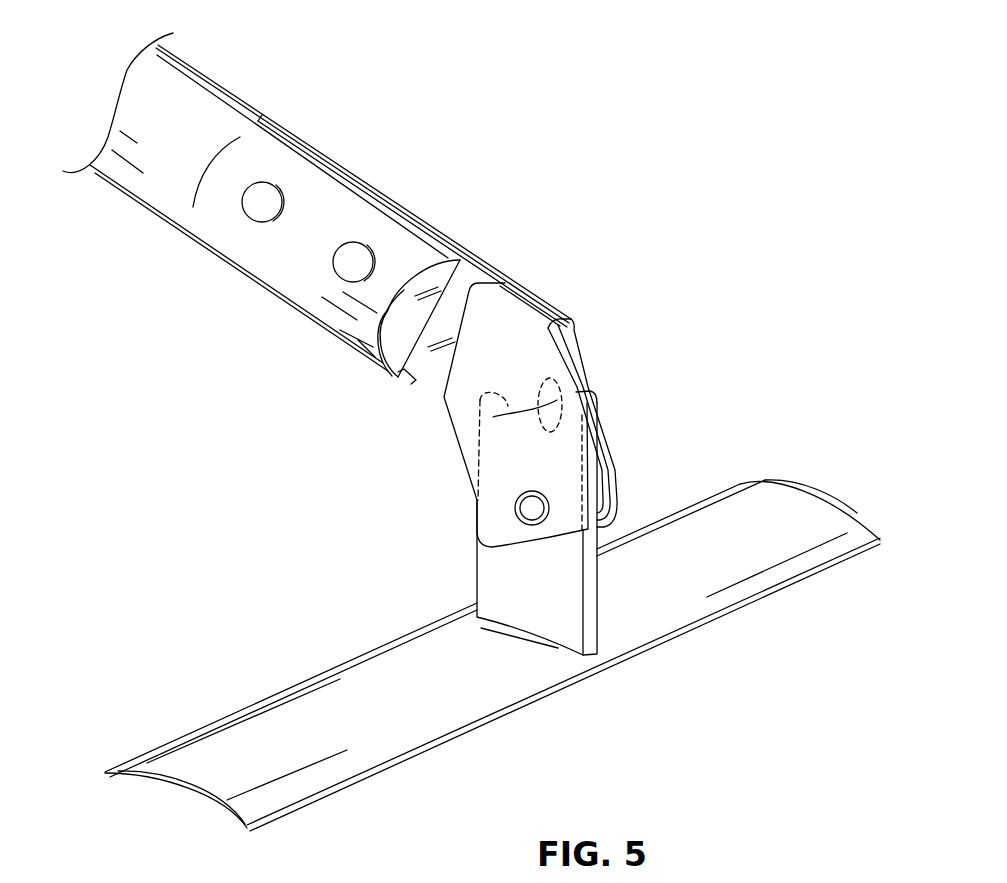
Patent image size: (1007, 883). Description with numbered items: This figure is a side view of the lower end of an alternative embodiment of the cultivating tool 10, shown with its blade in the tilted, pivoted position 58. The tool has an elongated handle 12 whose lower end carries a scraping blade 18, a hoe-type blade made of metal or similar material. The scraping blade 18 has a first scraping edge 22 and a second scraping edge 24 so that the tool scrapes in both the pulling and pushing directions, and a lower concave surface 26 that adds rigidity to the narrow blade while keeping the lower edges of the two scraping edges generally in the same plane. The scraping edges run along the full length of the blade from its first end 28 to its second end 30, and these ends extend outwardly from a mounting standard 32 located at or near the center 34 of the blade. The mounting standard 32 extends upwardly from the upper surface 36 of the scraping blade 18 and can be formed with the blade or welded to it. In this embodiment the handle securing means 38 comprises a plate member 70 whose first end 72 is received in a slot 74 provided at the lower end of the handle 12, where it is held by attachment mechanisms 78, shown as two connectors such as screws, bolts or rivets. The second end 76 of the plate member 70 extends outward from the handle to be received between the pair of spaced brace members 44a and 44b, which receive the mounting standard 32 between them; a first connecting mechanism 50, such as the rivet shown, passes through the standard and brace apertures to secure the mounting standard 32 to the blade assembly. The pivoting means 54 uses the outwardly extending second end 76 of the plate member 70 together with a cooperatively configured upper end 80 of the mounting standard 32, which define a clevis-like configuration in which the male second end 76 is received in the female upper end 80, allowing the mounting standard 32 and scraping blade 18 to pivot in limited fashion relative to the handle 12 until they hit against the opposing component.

The cultivating tool 10 is at (652, 225).
The elongated handle 12 is at (157, 77).
The scraping blade 18 is at (653, 605).
The first scraping edge 22 is at (227, 718).
The second scraping edge 24 is at (362, 778).
The lower concave surface 26 is at (176, 799).
The first end 28 is at (99, 762).
The second end 30 is at (880, 567).
The mounting standard 32 is at (495, 577).
The center 34 is at (605, 688).
The upper surface 36 is at (751, 517).
The handle securing means 38 is at (318, 117).
The first brace member 44a is at (463, 383).
The second brace member 44b is at (600, 474).
The first connecting mechanism 50 is at (520, 508).
The pivoting means 54 is at (590, 326).
The pivoted position 58 is at (663, 338).
The plate member 70 is at (438, 368).
The first end 72 is at (320, 145).
The slot 74 is at (420, 221).
The second end 76 is at (545, 300).
The attachment mechanisms 78 is at (246, 218).
The upper end 80 is at (604, 397).